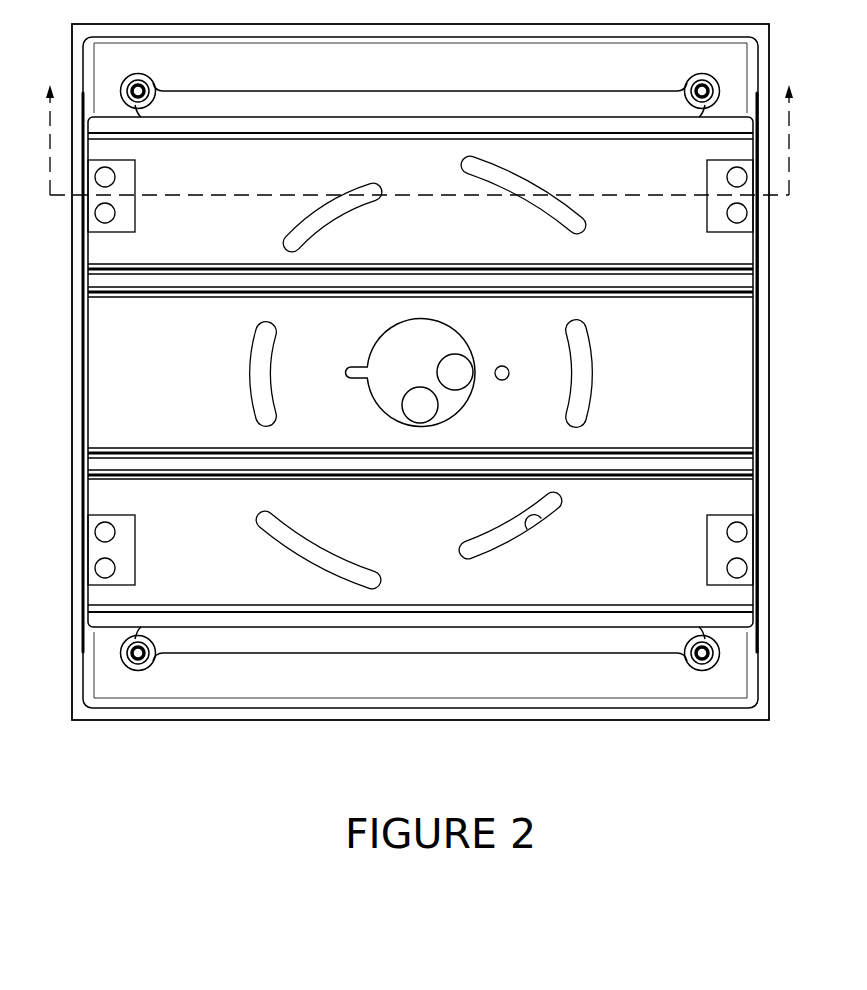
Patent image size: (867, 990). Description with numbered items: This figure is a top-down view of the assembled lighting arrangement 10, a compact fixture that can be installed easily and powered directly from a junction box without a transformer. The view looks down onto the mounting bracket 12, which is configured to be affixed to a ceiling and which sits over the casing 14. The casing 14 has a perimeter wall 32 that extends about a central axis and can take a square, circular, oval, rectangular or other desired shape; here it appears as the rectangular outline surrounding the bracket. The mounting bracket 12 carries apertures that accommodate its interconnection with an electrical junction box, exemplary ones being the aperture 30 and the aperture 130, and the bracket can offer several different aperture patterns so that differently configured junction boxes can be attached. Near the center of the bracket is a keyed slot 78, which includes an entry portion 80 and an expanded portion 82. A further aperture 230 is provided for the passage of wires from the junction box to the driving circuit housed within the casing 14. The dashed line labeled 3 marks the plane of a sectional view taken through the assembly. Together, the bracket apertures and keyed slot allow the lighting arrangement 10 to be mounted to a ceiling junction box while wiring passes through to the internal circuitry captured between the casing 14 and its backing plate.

The section line 3- 3 is at (420, 125).
The lighting arrangement 10 is at (175, 808).
The mounting bracket 12 is at (553, 570).
The casing 14 is at (157, 708).
The aperture 30 is at (253, 383).
The perimeter wall 32 is at (270, 713).
The keyed slot 78 is at (358, 353).
The entry portion 80 is at (364, 378).
The expanded portion 82 is at (343, 373).
The aperture 130 is at (535, 521).
The aperture 230 is at (462, 355).